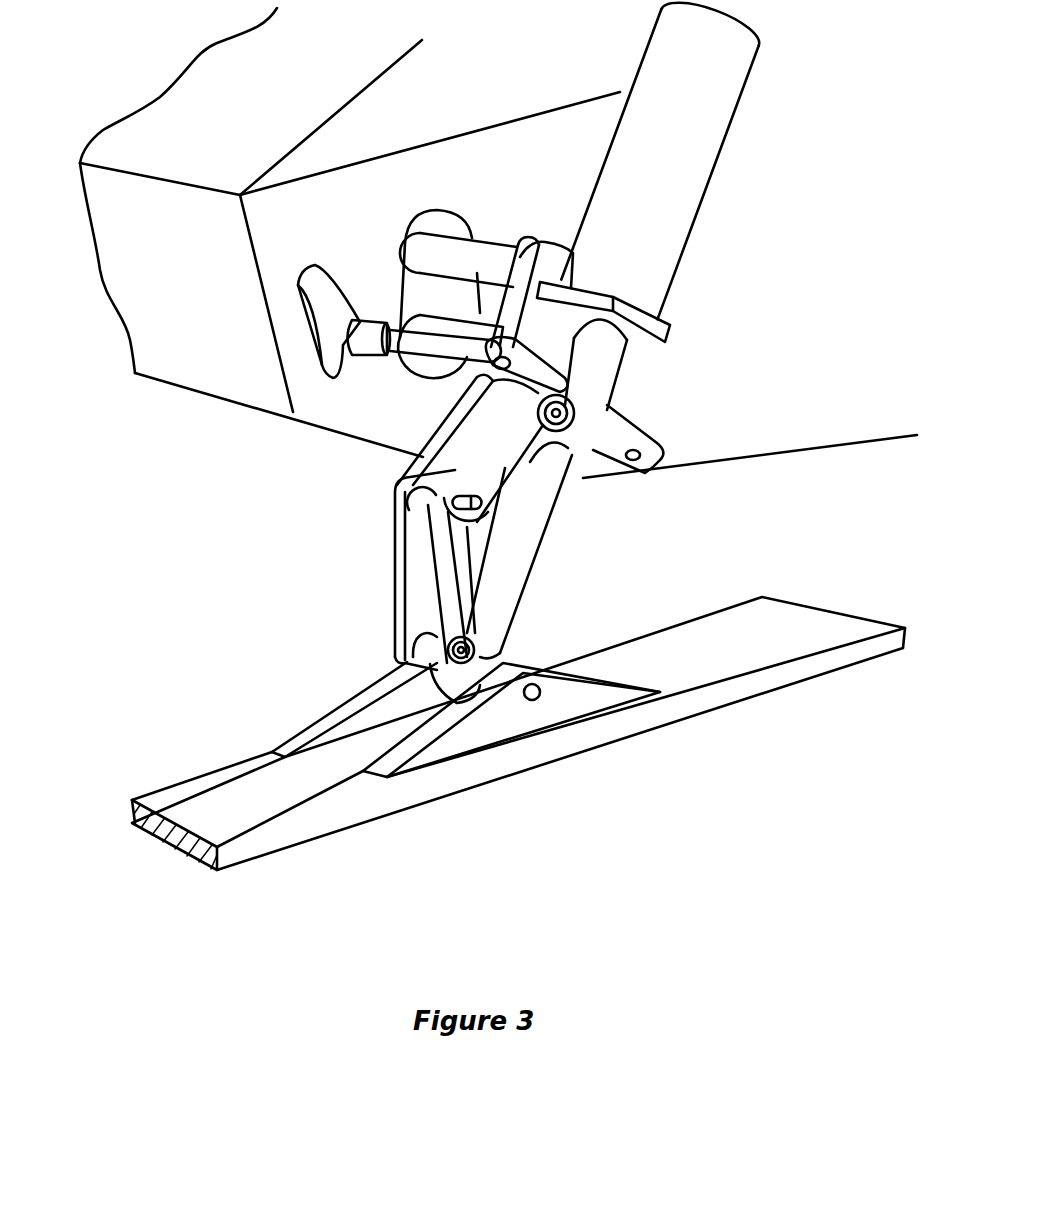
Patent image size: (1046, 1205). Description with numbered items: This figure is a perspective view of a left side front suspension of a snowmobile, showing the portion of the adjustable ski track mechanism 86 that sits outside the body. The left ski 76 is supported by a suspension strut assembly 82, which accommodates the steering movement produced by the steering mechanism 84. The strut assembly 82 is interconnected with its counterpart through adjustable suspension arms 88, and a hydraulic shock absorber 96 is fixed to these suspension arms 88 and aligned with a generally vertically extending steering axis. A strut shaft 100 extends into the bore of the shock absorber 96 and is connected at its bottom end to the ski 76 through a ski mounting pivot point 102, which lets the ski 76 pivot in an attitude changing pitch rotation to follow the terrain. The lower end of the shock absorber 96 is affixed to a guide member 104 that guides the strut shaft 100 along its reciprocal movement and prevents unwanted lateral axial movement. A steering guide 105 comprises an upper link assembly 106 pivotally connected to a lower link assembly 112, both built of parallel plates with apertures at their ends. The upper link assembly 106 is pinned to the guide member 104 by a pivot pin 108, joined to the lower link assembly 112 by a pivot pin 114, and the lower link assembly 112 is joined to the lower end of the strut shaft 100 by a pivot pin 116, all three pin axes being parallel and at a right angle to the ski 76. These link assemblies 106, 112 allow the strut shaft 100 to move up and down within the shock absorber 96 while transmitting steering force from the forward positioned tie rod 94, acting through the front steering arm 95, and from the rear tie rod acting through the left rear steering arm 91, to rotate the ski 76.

The left ski 76 is at (507, 773).
The suspension strut assembly 82 is at (717, 247).
The steering mechanism 84 is at (382, 292).
The adjustable ski track mechanism 86 is at (485, 374).
The adjustable suspension arms 88 is at (447, 310).
The left rear steering arm 91 is at (660, 440).
The forward positioned tie rod 94 is at (420, 342).
The front steering arm 95 is at (403, 408).
The hydraulic shock absorber 96 is at (728, 152).
The strut shaft 100 is at (545, 546).
The ski mounting pivot point 102 is at (418, 702).
The guide member 104 is at (615, 375).
The steering guide 105 is at (288, 563).
The upper link assembly 106 is at (412, 470).
The pivot pin 108 is at (603, 470).
The lower link assembly 112 is at (396, 585).
The pivot pin 114 is at (491, 512).
The pivot pin 116 is at (490, 657).